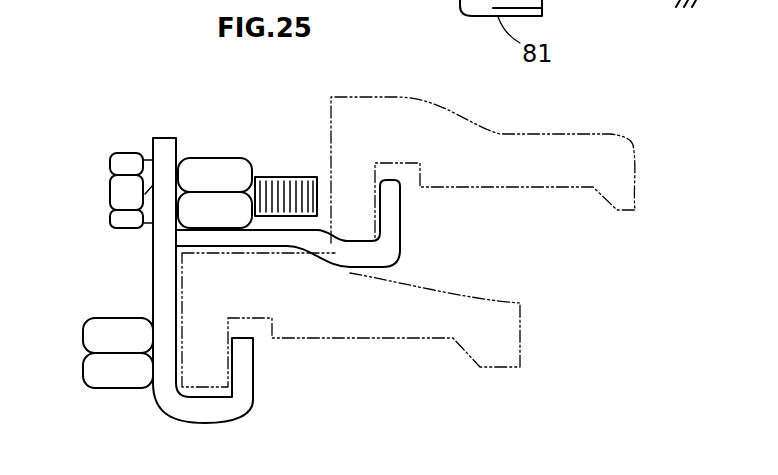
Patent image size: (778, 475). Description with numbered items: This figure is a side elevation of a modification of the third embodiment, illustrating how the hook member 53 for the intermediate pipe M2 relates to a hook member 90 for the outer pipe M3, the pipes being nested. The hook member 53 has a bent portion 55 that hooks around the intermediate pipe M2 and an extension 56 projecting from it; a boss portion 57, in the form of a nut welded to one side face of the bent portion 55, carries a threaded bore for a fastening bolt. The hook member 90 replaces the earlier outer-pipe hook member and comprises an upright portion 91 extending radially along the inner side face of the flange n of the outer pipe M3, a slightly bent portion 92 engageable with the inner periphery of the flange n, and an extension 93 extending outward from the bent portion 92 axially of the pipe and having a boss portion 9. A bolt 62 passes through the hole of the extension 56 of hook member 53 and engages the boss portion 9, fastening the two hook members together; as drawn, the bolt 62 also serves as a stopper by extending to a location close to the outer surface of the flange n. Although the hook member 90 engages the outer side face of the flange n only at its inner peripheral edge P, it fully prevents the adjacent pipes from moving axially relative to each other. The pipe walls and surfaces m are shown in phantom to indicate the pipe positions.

The hook member for the intermediate pipe 53 is at (282, 265).
The extension 56 is at (155, 140).
The bent portion 55 is at (237, 408).
The boss portion 57 is at (93, 337).
The bolt 62 is at (122, 192).
The boss portion 9 is at (208, 165).
The extension 93 is at (240, 241).
The hook member 90 is at (296, 240).
The upright portion 91 is at (390, 212).
The slightly bent portion 92 is at (372, 255).
The intermediate pipe M2 is at (507, 343).
The outer pipe M3 is at (602, 157).
The flange n is at (352, 162).
The panel surface m is at (473, 142).
The inner peripheral edge P is at (329, 262).